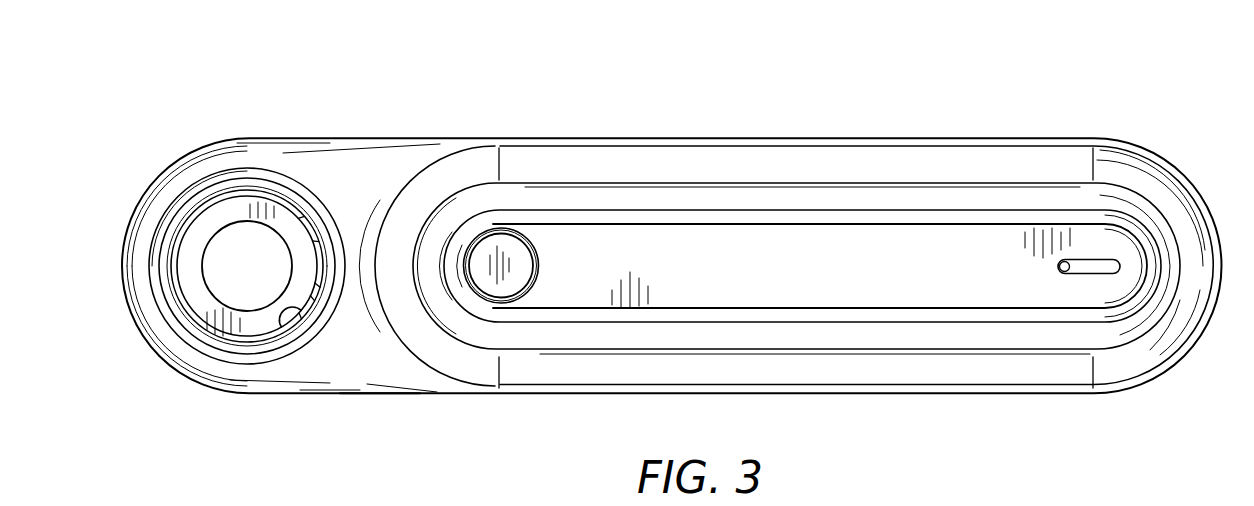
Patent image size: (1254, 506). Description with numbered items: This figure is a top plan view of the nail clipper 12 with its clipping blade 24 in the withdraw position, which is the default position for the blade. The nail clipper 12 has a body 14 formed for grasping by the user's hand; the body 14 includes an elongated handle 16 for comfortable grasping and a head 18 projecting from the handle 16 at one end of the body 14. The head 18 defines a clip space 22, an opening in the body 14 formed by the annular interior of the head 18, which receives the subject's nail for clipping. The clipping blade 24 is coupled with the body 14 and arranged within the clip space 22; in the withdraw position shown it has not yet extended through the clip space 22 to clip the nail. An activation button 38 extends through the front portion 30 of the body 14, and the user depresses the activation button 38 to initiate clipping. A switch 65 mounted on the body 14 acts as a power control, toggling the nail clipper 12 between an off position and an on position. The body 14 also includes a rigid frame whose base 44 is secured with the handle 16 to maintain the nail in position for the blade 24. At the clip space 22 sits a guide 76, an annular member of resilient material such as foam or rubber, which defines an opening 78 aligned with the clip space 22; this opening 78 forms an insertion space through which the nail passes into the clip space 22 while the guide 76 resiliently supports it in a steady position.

The nail clipper 12 is at (1010, 82).
The body 14 is at (1054, 132).
The handle 16 is at (897, 375).
The head 18 is at (352, 373).
The clip space 22 is at (222, 365).
The clipping blade 24 is at (282, 323).
The front portion 30 is at (1175, 206).
The activation button 38 is at (498, 287).
The base 44 is at (230, 190).
The switch 65 is at (1089, 278).
The guide 76 is at (205, 223).
The opening 78 is at (212, 274).